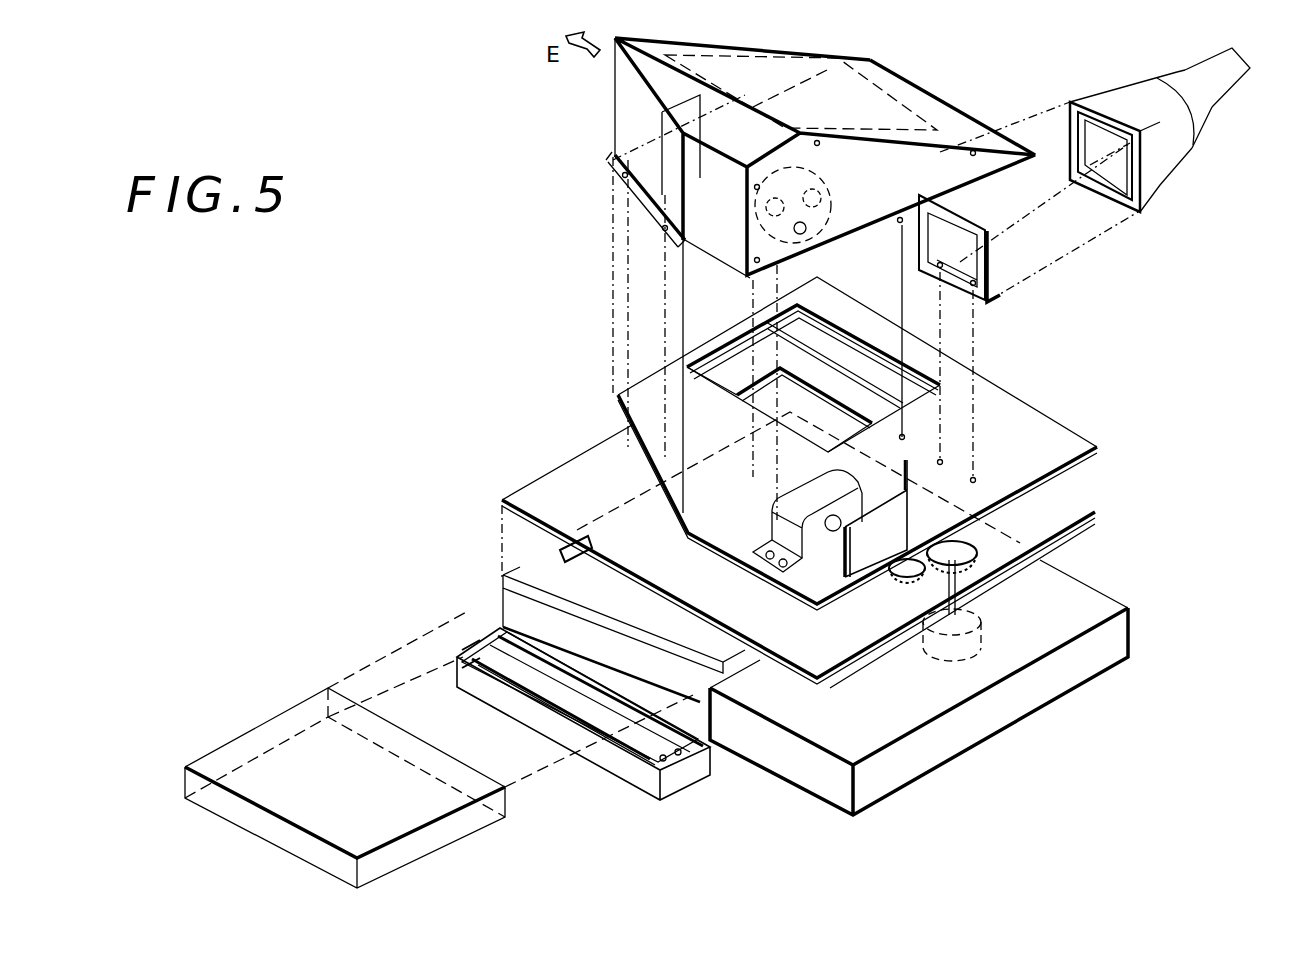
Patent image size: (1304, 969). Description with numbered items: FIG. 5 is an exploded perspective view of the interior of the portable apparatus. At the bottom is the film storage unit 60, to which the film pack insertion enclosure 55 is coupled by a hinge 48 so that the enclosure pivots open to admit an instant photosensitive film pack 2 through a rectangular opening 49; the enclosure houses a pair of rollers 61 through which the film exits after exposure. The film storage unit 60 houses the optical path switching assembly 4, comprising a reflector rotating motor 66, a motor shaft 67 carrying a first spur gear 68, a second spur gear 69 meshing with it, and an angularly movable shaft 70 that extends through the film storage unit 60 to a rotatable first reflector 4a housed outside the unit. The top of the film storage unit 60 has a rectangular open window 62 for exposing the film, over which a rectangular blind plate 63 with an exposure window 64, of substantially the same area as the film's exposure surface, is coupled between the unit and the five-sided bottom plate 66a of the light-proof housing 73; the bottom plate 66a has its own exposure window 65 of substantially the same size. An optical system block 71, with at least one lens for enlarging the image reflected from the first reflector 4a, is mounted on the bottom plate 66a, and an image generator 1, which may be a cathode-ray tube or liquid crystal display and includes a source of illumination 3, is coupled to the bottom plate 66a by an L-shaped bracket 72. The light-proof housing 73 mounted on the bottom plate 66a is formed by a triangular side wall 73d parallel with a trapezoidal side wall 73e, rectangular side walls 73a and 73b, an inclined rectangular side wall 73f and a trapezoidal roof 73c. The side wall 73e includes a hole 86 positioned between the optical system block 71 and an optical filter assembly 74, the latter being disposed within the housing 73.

The image generator 1 is at (1160, 160).
The instant photosensitive film pack 2 is at (305, 755).
The source of illumination 3 is at (1230, 85).
The optical path switching assembly 4 is at (998, 633).
The first reflector 4a is at (863, 553).
The hinge 48 is at (495, 635).
The rectangular opening 49 is at (650, 687).
The film pack insertion enclosure 55 is at (580, 752).
The film storage unit 60 is at (1010, 712).
The rollers 61 is at (487, 645).
The rectangular open window 62 is at (560, 565).
The rectangular blind plate 63 is at (530, 487).
The exposure window 64 is at (757, 380).
The exposure window 65 is at (753, 333).
The reflector rotating motor 66 is at (950, 602).
The bottom plate 66a is at (1100, 455).
The motor shaft 67 is at (1000, 580).
The first spur gear 68 is at (980, 547).
The second spur gear 69 is at (903, 580).
The angularly movable shaft 70 is at (913, 535).
The optical system block 71 is at (753, 552).
The L-shaped bracket 72 is at (993, 257).
The light-proof housing 73 is at (612, 119).
The rectangular side wall 73a is at (653, 170).
The rectangular side wall 73b is at (713, 238).
The trapezoidal roof 73c is at (645, 62).
The triangular side wall 73d is at (820, 60).
The trapezoidal side wall 73e is at (947, 153).
The inclined rectangular side wall 73f is at (928, 102).
The optical filter assembly 74 is at (811, 162).
The hole 86 is at (806, 232).